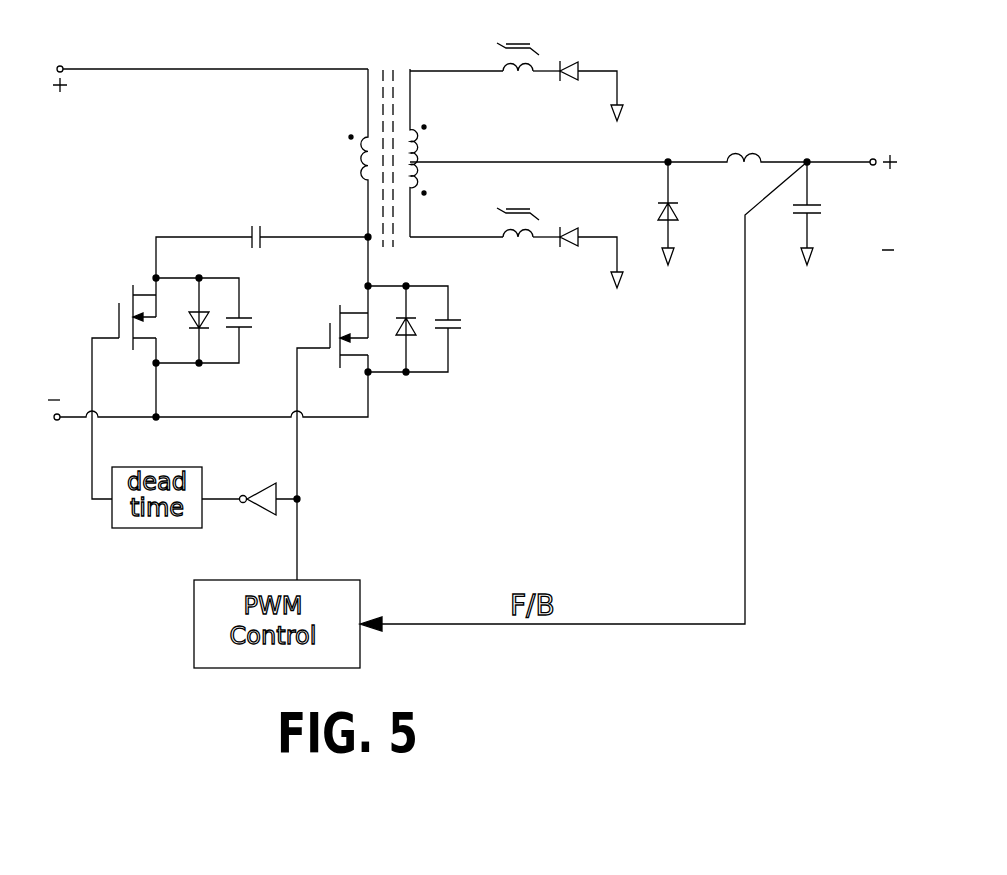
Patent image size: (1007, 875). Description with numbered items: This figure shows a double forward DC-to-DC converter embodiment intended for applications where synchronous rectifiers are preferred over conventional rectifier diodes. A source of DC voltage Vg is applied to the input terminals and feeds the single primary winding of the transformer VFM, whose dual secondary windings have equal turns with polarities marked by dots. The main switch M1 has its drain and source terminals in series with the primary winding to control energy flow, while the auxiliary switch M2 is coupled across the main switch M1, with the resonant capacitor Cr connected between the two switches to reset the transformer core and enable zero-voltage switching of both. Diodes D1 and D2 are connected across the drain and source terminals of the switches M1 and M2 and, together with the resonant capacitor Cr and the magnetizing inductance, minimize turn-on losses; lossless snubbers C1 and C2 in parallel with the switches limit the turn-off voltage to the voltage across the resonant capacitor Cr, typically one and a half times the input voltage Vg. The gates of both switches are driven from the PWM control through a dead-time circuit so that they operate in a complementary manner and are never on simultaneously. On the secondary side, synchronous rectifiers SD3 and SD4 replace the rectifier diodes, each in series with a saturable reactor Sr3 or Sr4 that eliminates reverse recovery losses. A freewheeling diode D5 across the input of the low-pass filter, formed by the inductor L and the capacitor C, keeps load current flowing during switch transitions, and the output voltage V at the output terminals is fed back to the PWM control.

The input DC voltage Vg is at (50, 233).
The transformer VFM is at (387, 164).
The saturable reactor Sr3 is at (521, 39).
The synchronous rectifier SD3 is at (590, 53).
The saturable reactor Sr4 is at (522, 246).
The synchronous rectifier SD4 is at (590, 221).
The freewheeling diode D5 is at (693, 212).
The inductor L is at (737, 143).
The capacitor C is at (829, 212).
The output voltage V is at (852, 202).
The resonant capacitor Cr is at (263, 233).
The auxiliary switch M2 is at (125, 387).
The diode D2 is at (189, 342).
The lossless snubber C2 is at (212, 349).
The main switch M1 is at (334, 431).
The diode D1 is at (403, 353).
The lossless snubber C1 is at (445, 355).